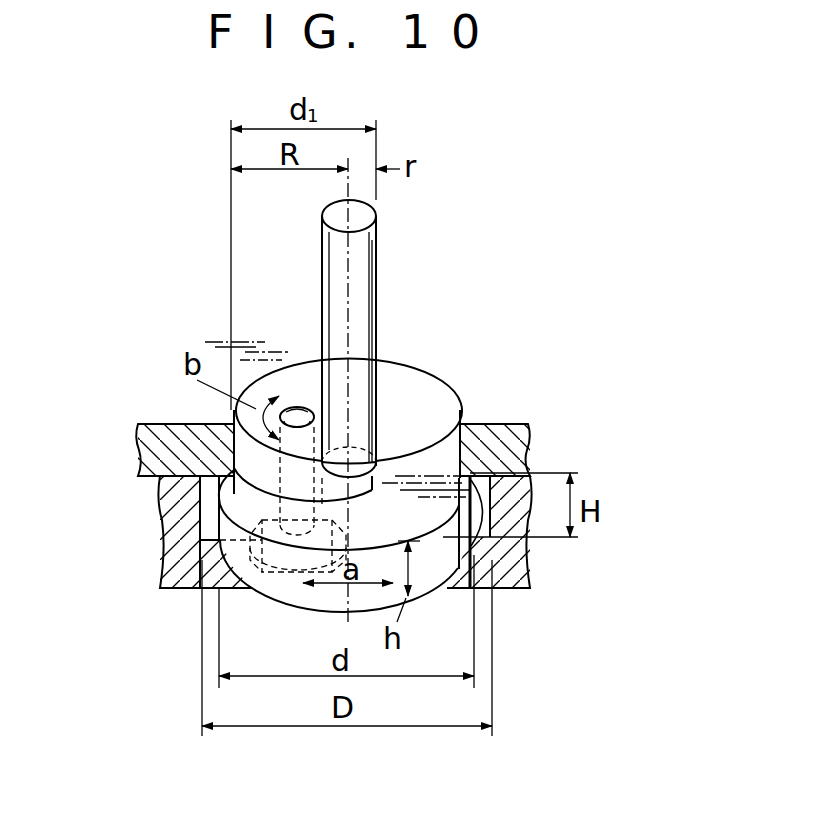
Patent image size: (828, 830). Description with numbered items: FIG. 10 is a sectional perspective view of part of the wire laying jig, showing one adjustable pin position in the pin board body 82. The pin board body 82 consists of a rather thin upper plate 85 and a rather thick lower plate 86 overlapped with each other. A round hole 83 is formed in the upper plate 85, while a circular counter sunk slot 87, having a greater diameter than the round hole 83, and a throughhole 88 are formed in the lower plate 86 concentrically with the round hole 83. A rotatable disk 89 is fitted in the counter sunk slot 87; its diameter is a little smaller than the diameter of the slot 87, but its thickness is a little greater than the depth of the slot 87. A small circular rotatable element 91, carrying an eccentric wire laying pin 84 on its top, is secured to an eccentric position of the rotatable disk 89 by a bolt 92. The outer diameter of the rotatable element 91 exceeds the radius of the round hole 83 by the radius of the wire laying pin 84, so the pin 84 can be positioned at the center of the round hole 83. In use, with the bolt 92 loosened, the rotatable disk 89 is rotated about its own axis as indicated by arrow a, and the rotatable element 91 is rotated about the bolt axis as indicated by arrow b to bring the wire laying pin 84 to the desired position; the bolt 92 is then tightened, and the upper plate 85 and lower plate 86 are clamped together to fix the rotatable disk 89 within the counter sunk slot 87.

The pin board body 82 is at (170, 421).
The round hole 83 is at (428, 410).
The wire laying pin 84 is at (372, 273).
The upper plate 85 is at (152, 452).
The lower plate 86 is at (172, 546).
The circular counter sunk slot 87 is at (479, 473).
The throughhole 88 is at (432, 548).
The rotatable disk 89 is at (290, 602).
The rotatable element 91 is at (308, 384).
The bolt 92 is at (345, 545).